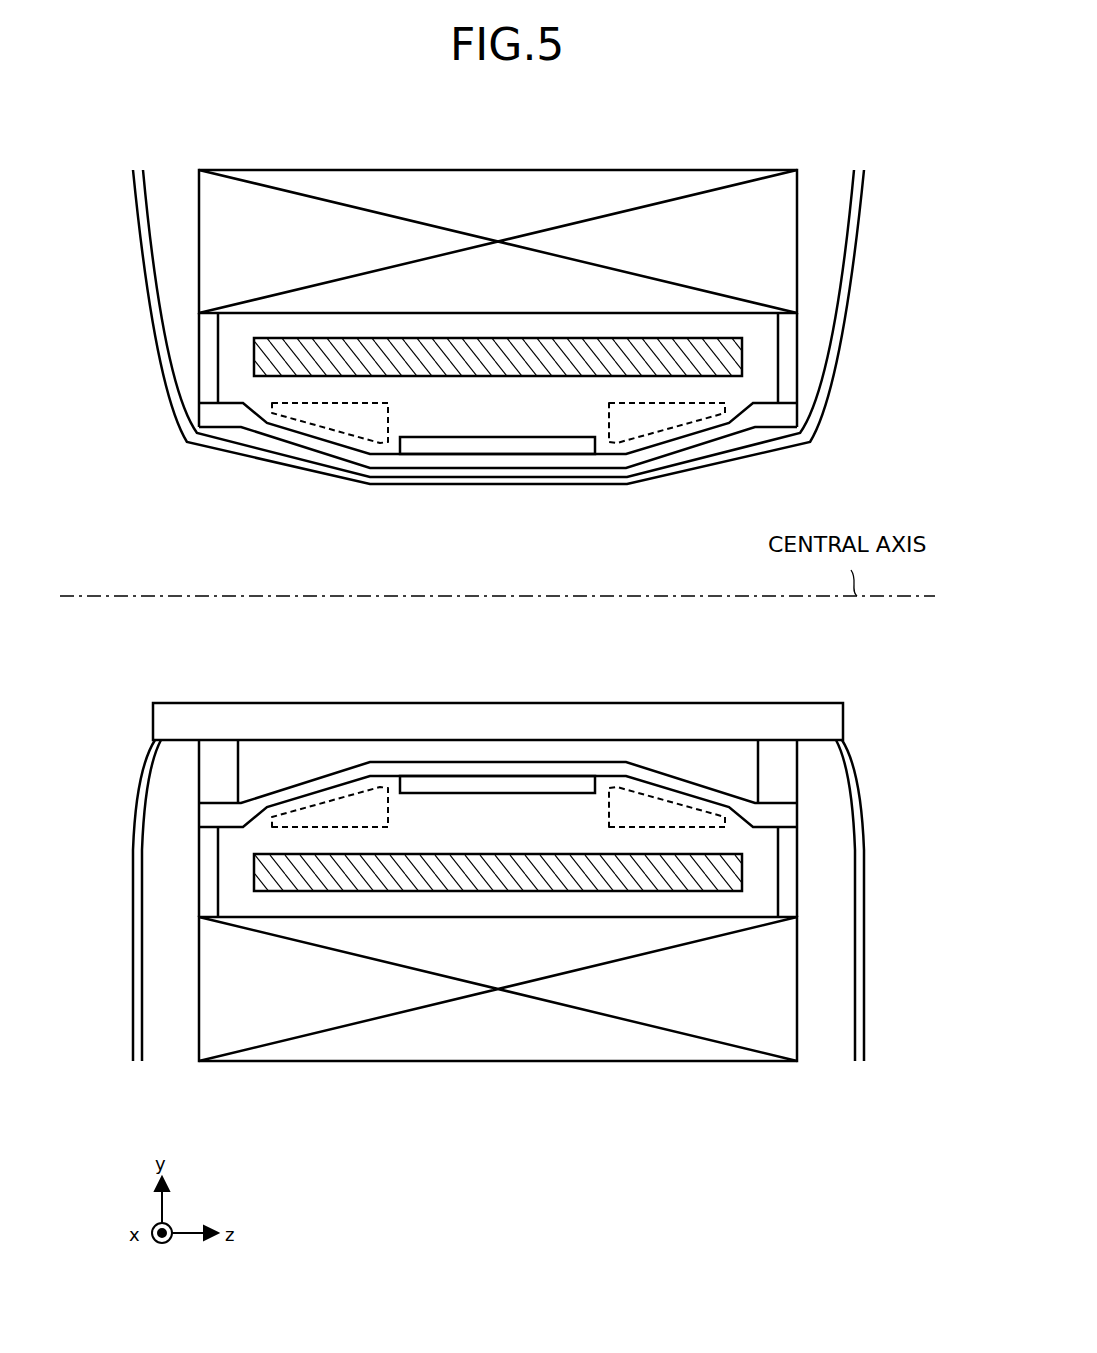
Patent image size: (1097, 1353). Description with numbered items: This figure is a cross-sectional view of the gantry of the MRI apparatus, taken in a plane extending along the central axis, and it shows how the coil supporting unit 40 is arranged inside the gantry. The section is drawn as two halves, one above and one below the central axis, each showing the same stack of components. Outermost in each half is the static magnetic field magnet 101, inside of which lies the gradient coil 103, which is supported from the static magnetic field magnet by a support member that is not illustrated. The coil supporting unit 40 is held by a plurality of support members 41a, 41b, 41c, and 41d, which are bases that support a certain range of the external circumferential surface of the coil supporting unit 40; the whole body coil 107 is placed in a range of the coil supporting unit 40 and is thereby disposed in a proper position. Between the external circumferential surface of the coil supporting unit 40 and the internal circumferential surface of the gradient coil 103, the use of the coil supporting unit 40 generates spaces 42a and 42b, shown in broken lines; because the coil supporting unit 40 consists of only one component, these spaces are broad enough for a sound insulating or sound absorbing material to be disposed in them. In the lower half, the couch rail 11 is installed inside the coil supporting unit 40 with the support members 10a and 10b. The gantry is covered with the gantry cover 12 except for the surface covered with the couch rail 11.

The static magnetic field magnet 101 is at (640, 170).
The gantry cover 12 is at (853, 282).
The support member 41c is at (200, 358).
The support member 41d is at (797, 338).
The support member 41a is at (199, 870).
The support member 41b is at (797, 853).
The gradient coil 103 is at (742, 358).
The space 42a is at (318, 426).
The space 42b is at (678, 426).
The coil supporting unit 40 is at (523, 468).
The whole body (WB) coil 107 is at (597, 447).
The couch rail 11 is at (760, 703).
The support member 10a is at (199, 763).
The support member 10b is at (797, 757).